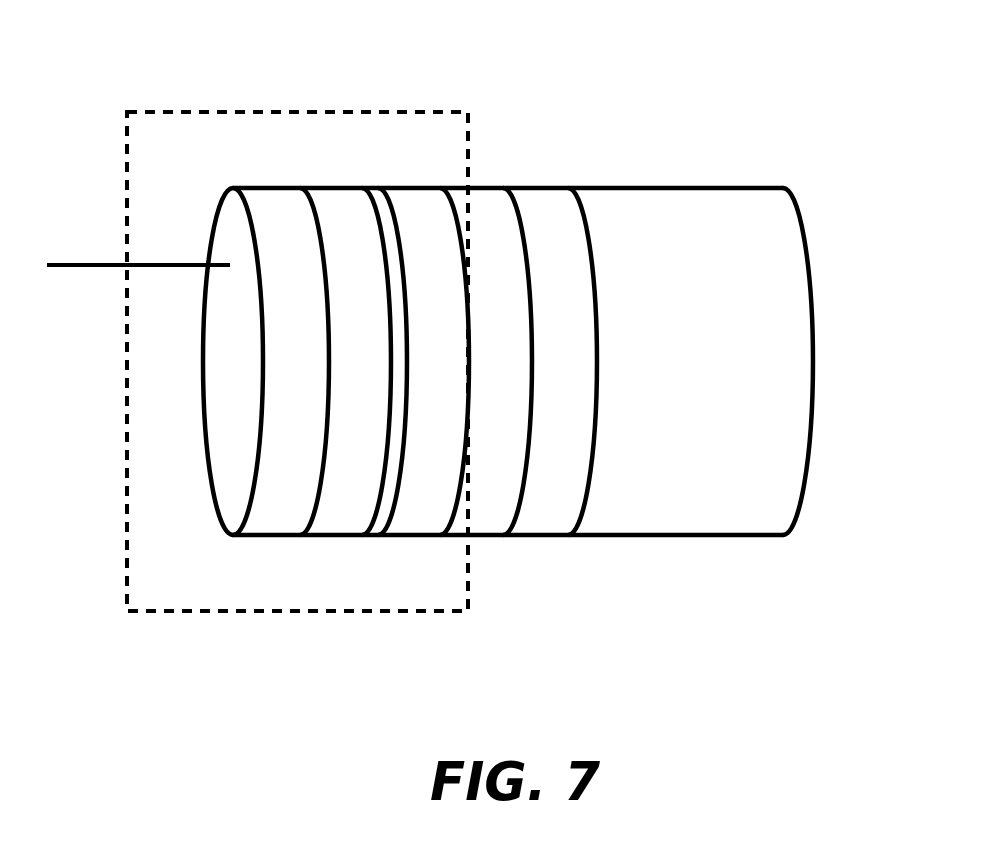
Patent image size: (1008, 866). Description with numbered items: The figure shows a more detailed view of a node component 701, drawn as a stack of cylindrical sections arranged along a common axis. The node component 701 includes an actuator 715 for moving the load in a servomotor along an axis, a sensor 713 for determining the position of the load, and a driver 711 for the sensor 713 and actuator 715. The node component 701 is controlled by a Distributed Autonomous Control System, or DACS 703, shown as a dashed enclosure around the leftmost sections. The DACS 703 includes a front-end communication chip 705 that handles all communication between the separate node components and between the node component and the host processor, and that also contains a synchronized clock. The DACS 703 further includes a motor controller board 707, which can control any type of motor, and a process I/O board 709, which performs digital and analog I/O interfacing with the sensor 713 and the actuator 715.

The node component 701 is at (705, 88).
The Distributed Autonomous Control System (DACS) 703 is at (300, 112).
The front-end communication chip 705 is at (272, 535).
The motor controller board 707 is at (338, 535).
The process I/O board 709 is at (412, 535).
The driver 711 is at (488, 535).
The sensor 713 is at (543, 535).
The actuator 715 is at (672, 535).